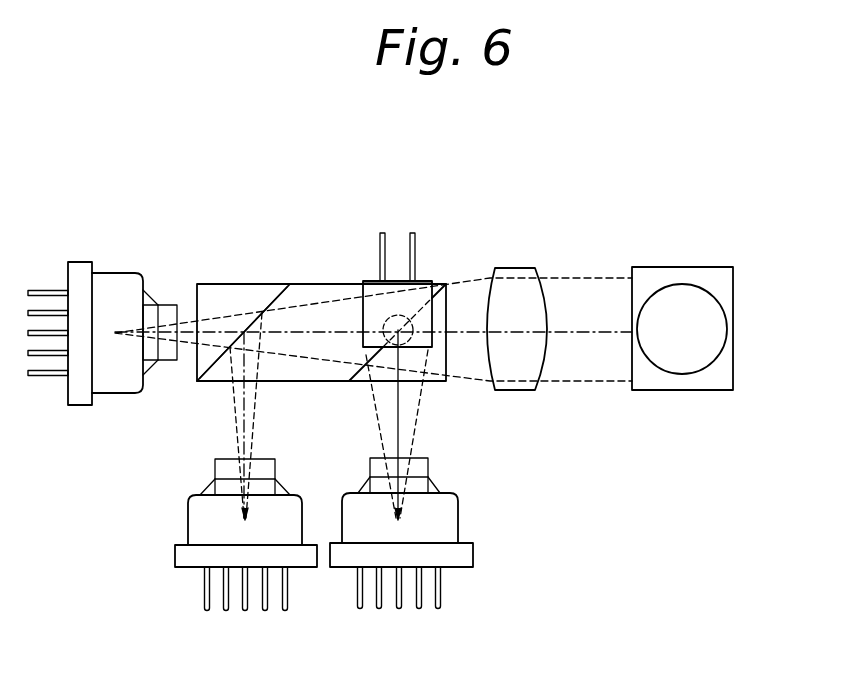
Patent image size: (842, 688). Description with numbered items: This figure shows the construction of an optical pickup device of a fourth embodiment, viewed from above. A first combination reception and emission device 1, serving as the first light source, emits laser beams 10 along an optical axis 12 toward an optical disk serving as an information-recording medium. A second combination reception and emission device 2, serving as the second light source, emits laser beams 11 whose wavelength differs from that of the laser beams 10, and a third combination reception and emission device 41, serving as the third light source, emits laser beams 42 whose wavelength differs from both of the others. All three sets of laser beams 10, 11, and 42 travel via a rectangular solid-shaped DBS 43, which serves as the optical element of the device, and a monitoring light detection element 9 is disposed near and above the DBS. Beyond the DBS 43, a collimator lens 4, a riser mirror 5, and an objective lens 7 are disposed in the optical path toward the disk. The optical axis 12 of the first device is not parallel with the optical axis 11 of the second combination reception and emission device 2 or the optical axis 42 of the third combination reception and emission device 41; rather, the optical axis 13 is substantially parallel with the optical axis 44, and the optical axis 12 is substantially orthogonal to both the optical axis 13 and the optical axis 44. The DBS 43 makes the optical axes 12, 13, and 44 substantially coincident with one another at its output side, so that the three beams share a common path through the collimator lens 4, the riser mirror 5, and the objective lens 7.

The first combination reception and emission device 1 is at (132, 393).
The second combination reception and emission device 2 is at (458, 513).
The collimator lens 4 is at (517, 268).
The riser mirror 5 is at (682, 267).
The objective lens 7 is at (707, 328).
The monitoring light detection element 9 is at (416, 255).
The laser beams 10 is at (223, 317).
The laser beams 11 is at (415, 433).
The optical axis 12 is at (186, 318).
The optical axis 13 is at (400, 402).
The third combination reception and emission device 41 is at (188, 523).
The laser beams 42 is at (258, 412).
The rectangular solid-shaped DBS 43 is at (310, 284).
The optical axis 44 is at (250, 440).